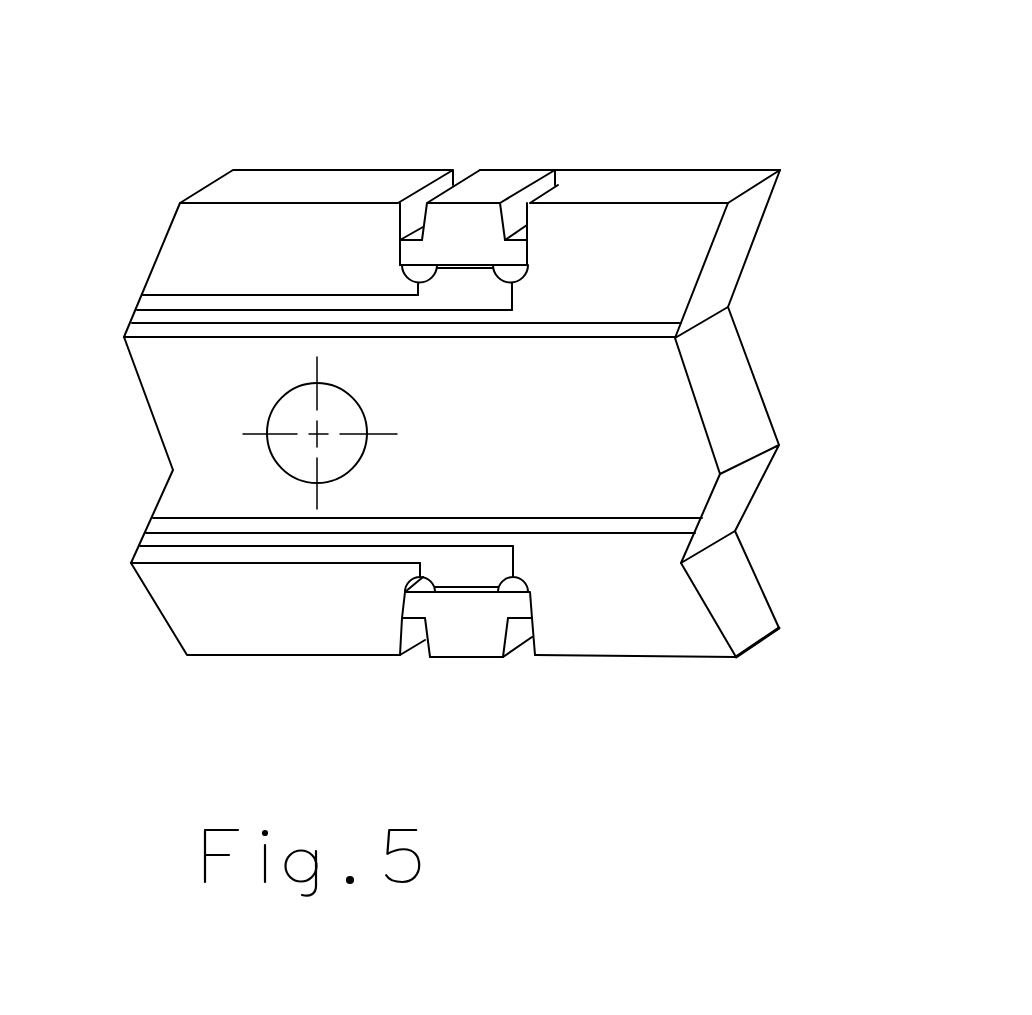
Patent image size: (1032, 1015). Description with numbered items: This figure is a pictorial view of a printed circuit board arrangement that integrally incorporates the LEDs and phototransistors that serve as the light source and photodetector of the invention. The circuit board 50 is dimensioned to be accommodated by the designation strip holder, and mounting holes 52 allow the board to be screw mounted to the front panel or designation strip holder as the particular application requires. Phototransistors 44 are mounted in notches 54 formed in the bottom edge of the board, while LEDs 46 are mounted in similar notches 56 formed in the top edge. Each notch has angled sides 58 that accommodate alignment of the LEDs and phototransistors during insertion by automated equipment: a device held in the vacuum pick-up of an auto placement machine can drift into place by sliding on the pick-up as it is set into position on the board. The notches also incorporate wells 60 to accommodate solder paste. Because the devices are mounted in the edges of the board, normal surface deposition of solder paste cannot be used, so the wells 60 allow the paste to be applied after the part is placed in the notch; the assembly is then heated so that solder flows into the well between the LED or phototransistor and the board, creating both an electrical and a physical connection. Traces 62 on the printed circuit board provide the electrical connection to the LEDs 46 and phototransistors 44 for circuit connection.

The phototransistor 44 is at (432, 658).
The LED 46 is at (493, 172).
The rail body 50 is at (667, 453).
The mounting hole 52 is at (268, 423).
The notch 54 is at (533, 637).
The notch 56 is at (531, 220).
The angled side 58 is at (414, 200).
The well 60 is at (523, 278).
The trace 62 is at (265, 294).